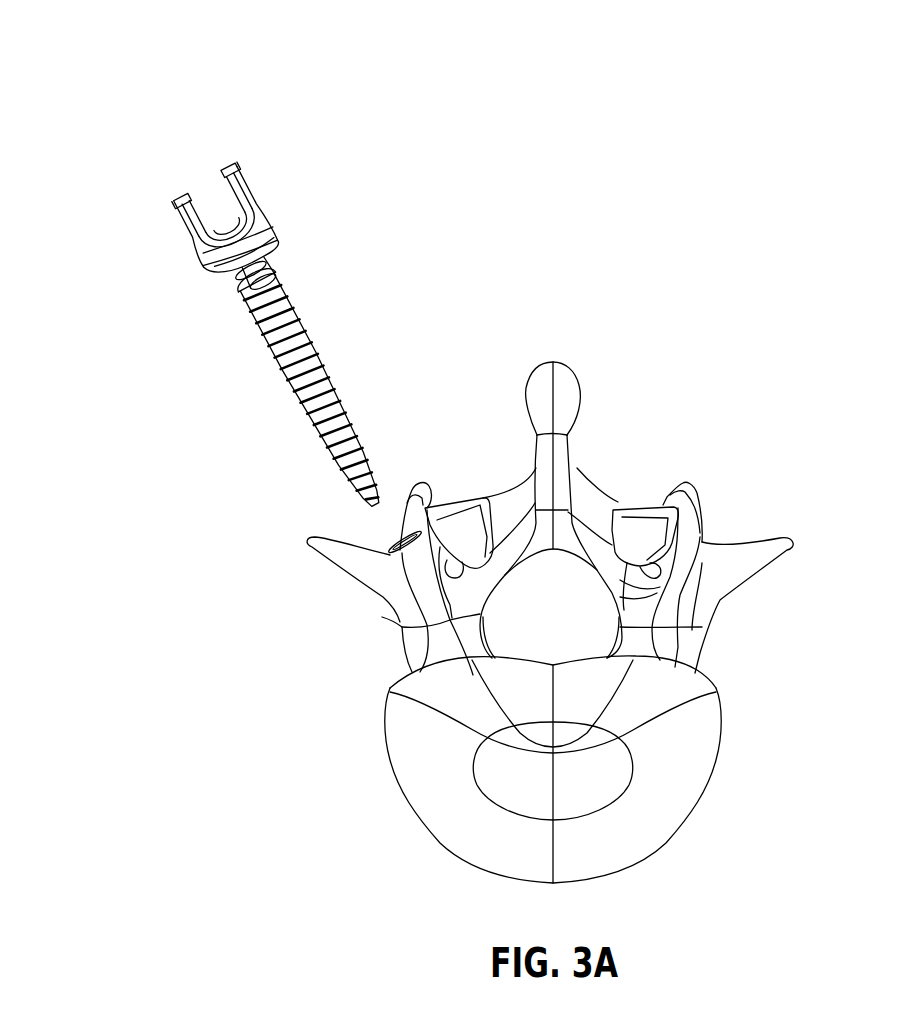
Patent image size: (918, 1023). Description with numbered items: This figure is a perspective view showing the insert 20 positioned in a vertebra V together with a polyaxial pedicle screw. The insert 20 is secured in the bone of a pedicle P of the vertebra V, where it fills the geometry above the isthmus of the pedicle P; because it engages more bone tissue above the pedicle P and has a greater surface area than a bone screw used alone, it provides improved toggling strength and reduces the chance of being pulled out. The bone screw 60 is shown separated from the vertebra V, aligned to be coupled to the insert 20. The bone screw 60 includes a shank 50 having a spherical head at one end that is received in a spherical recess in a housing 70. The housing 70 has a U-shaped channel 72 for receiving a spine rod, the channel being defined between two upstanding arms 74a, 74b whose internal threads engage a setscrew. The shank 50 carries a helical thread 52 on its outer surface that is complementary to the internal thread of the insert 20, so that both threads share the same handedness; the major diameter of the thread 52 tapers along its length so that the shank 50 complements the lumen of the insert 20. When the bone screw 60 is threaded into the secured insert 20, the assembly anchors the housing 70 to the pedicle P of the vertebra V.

The bone screw 60 is at (213, 346).
The housing 70 is at (256, 209).
The U-shaped channel 72 is at (210, 202).
The upstanding arm 74a is at (180, 224).
The upstanding arm 74b is at (263, 193).
The shank 50 is at (281, 301).
The thread 52 is at (297, 327).
The insert 20 is at (398, 538).
The vertebra V is at (567, 395).
The pedicle P is at (393, 607).